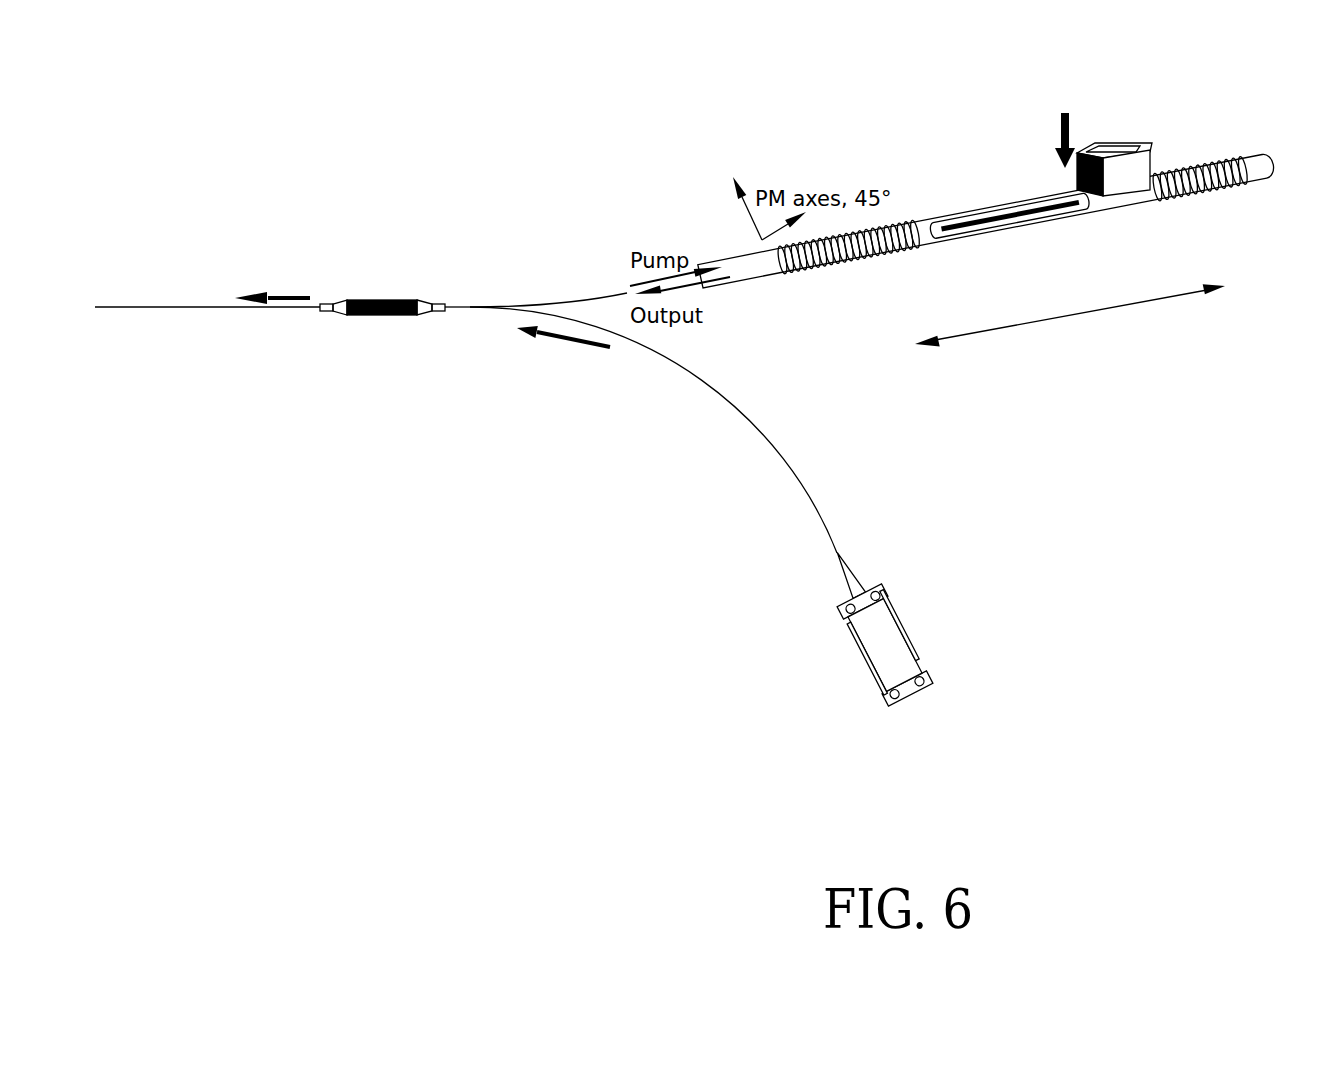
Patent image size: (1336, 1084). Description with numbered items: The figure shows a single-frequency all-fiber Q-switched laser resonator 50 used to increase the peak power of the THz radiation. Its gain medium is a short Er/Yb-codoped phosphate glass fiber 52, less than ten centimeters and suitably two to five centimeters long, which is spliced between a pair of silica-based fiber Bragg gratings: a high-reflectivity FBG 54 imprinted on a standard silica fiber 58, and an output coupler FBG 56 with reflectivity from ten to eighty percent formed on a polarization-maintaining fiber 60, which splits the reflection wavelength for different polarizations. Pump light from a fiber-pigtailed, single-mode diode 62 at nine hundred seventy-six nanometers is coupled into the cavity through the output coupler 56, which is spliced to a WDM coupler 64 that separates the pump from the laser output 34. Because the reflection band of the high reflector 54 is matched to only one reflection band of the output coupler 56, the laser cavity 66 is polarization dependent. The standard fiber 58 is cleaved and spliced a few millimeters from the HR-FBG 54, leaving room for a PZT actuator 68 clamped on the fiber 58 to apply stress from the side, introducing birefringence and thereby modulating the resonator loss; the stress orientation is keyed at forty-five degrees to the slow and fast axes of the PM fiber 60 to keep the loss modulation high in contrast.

The laser output 34 is at (265, 294).
The Q-switched laser resonator 50 is at (447, 559).
The Er/Yb-codoped phosphate glass fiber 52 is at (1020, 221).
The high-reflectivity fiber Bragg grating 54 is at (1207, 187).
The output coupler fiber Bragg grating 56 is at (848, 264).
The standard silica fiber 58 is at (1253, 160).
The polarization-maintaining fiber 60 is at (752, 275).
The fiber-pigtailed single-mode 976-nm diode 62 is at (908, 628).
The WDM coupler 64 is at (399, 299).
The laser cavity 66 is at (1100, 312).
The PZT actuator 68 is at (1127, 140).